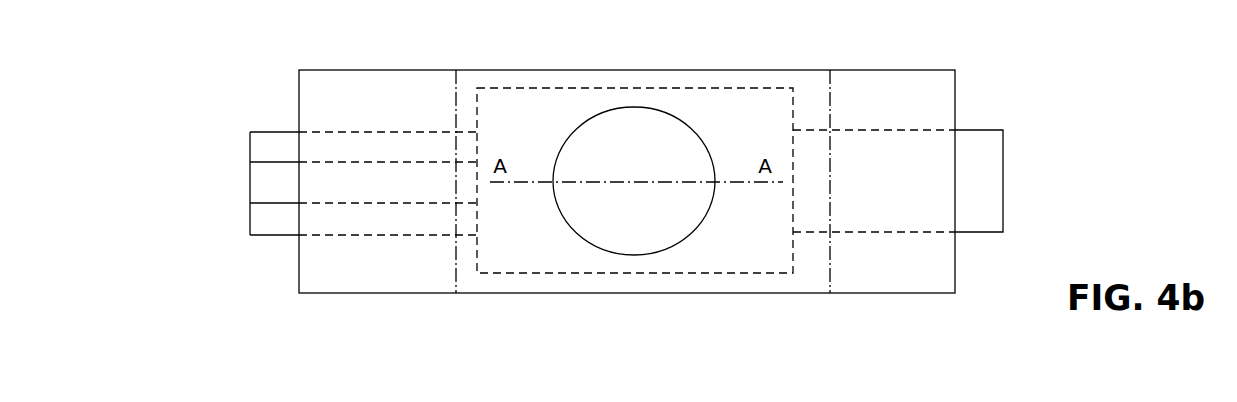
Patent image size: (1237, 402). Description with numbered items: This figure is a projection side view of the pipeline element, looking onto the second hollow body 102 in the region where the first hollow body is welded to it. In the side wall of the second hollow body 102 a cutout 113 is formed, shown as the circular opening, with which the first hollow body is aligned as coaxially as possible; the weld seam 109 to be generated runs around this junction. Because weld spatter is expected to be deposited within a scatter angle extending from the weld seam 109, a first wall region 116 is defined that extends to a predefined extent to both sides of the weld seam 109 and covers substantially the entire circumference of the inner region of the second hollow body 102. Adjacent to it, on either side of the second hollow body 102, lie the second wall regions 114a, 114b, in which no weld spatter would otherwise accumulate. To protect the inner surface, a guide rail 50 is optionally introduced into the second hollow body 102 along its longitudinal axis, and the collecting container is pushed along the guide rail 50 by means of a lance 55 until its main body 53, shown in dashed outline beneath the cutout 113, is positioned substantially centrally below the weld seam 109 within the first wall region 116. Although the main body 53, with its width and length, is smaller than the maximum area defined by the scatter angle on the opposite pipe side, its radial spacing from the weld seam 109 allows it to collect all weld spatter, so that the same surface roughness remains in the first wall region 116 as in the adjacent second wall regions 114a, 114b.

The guide rail 50 is at (263, 147).
The lance 55 is at (263, 183).
The second hollow body 102 is at (437, 295).
The main body 53 is at (535, 257).
The weld seam 109 is at (682, 243).
The cutout 113 is at (618, 135).
The second wall region 114a is at (456, 70).
The second wall region 114b is at (955, 70).
The first wall region 116 is at (456, 70).